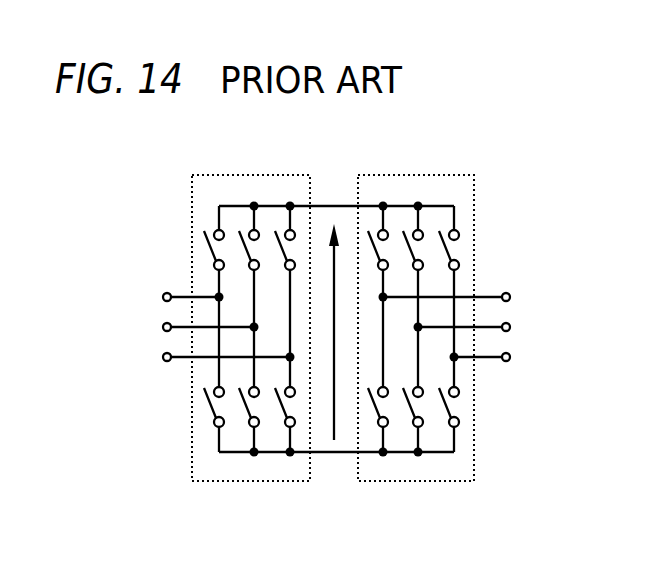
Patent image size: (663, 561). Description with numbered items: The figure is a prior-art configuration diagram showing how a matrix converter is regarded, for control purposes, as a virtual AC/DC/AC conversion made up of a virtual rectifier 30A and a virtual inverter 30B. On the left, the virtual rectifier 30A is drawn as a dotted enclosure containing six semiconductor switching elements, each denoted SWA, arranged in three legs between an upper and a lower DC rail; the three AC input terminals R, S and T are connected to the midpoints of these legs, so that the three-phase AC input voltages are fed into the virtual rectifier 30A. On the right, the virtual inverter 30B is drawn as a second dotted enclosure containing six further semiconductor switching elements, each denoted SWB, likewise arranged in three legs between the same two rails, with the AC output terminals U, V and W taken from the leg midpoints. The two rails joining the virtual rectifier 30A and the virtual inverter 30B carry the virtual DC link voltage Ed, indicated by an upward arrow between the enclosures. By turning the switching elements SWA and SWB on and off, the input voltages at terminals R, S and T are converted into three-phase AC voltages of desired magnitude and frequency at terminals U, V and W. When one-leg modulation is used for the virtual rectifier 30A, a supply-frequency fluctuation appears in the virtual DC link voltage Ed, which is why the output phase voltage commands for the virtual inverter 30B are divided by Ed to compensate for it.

The virtual rectifier 30A is at (210, 305).
The virtual inverter 30B is at (458, 304).
The semiconductor switching element of the virtual rectifier SWA is at (295, 252).
The semiconductor switching element of the virtual inverter SWB is at (428, 250).
The virtual DC link voltage Ed is at (338, 407).
The AC input terminal R is at (182, 297).
The AC input terminal S is at (200, 327).
The AC input terminal T is at (217, 357).
The AC output terminal U is at (455, 297).
The AC output terminal V is at (472, 327).
The AC output terminal W is at (493, 357).